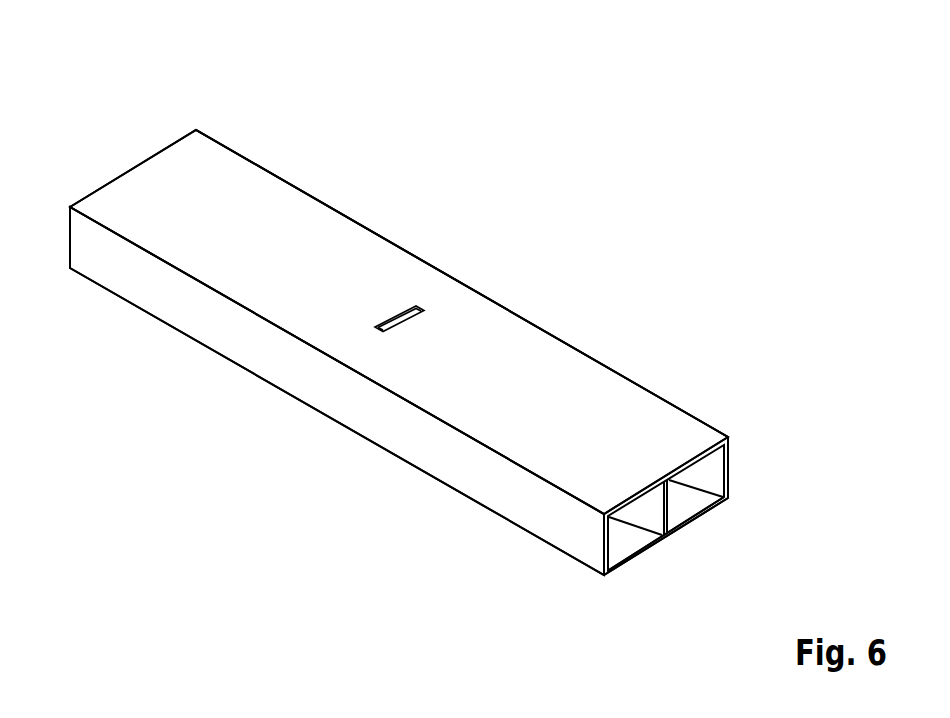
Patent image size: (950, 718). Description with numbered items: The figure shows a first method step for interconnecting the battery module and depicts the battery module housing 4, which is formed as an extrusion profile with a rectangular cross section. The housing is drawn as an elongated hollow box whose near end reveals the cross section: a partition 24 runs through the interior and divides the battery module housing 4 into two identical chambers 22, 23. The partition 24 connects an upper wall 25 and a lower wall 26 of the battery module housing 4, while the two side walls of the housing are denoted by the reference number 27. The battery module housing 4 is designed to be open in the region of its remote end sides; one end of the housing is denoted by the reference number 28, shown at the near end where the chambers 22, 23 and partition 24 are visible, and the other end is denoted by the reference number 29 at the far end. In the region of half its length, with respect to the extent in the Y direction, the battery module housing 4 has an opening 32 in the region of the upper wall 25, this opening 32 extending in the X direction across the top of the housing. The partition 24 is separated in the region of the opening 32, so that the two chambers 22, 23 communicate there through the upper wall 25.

The end of the battery module housing 29 is at (155, 124).
The battery module housing 4 is at (458, 292).
The upper wall 25 is at (597, 372).
The side walls 27 is at (493, 497).
The end of the battery module housing 28 is at (759, 557).
The lower wall 26 is at (636, 556).
The partition 24 is at (665, 505).
The chamber 22 is at (633, 537).
The chamber 23 is at (705, 499).
The opening 32 is at (410, 303).